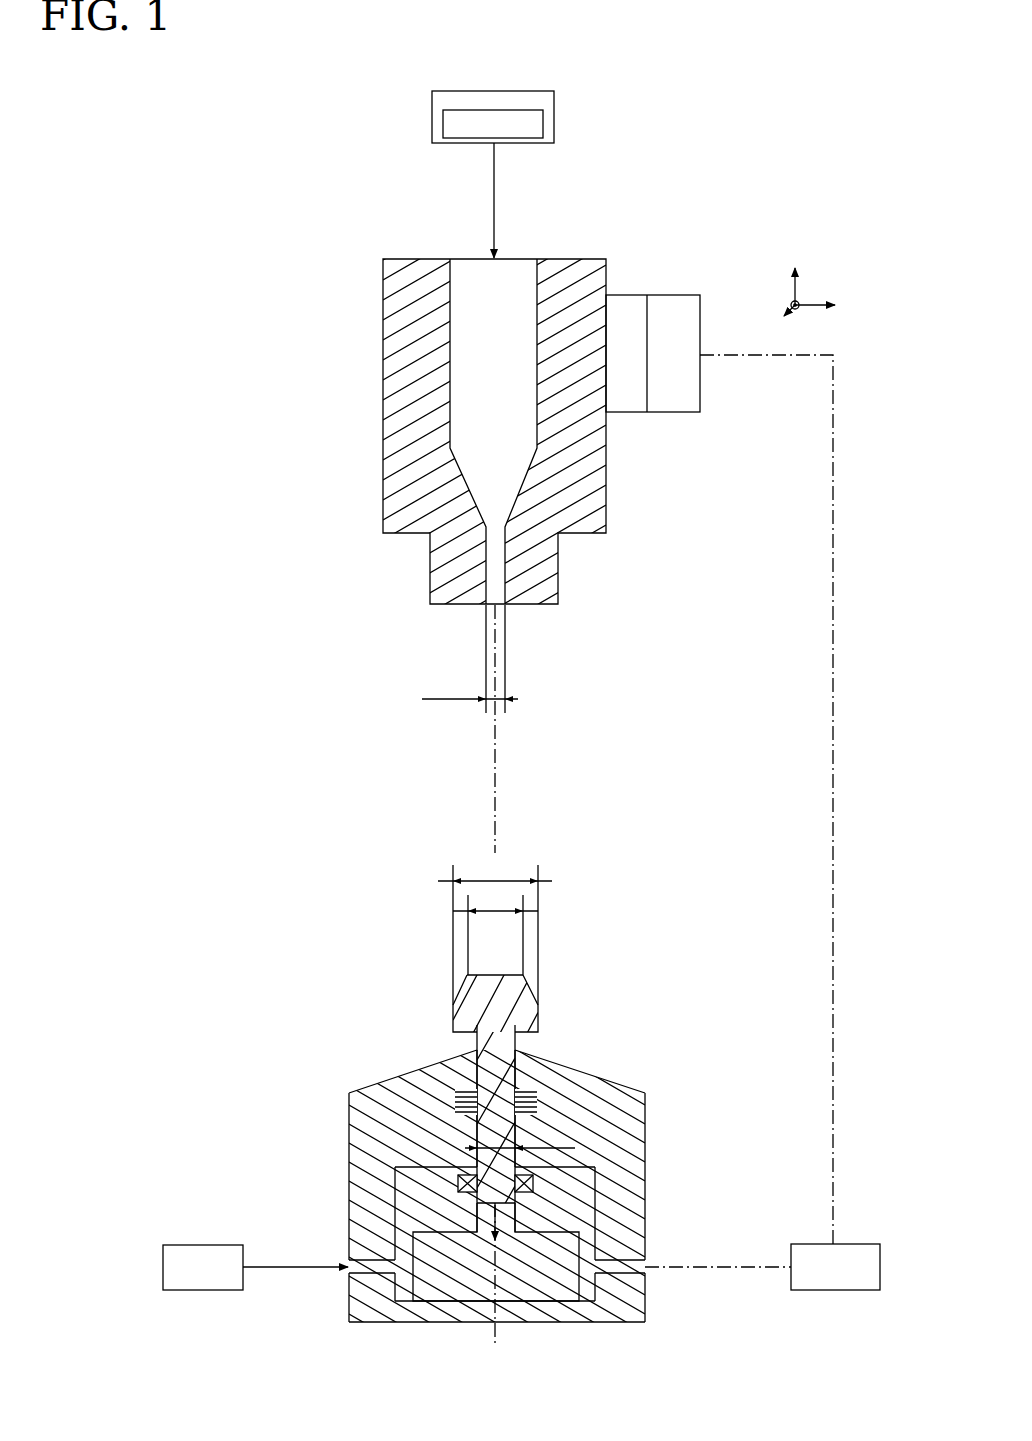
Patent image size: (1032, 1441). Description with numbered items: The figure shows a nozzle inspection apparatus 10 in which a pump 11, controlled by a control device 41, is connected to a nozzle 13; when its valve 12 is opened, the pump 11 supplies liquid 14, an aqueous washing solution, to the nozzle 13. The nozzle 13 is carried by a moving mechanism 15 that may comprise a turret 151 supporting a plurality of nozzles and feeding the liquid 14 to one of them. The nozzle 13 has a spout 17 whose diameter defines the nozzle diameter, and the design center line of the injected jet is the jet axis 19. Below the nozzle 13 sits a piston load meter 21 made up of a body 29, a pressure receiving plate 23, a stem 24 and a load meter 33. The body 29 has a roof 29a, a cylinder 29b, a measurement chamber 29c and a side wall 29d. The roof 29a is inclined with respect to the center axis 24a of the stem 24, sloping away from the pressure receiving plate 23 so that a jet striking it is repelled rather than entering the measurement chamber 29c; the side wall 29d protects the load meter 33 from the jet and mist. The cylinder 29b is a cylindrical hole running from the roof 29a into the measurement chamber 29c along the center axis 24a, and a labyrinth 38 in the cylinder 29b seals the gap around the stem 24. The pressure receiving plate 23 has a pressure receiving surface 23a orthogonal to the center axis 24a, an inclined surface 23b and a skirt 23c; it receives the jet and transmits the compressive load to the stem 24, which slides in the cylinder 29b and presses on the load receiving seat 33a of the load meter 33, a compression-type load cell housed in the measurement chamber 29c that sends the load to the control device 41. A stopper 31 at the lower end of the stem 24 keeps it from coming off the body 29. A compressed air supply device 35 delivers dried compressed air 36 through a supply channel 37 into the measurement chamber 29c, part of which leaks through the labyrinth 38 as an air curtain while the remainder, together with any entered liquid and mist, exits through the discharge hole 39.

The inspection apparatus 10 is at (830, 91).
The pump 11 is at (531, 117).
The valve 12 is at (543, 127).
The nozzle 13 is at (580, 258).
The liquid 14 is at (517, 200).
The moving mechanism 15 is at (674, 320).
The turret 151 is at (633, 295).
The spout 17 is at (497, 607).
The jet axis 19 is at (497, 786).
The piston load meter 21 is at (372, 965).
The pressure receiving plate 23 is at (584, 966).
The pressure receiving surface 23a is at (505, 975).
The inclined surface 23b is at (535, 990).
The skirt 23c is at (543, 1033).
The stem 24 is at (518, 1042).
The center axis 24a is at (500, 1335).
The body 29 is at (432, 1178).
The roof 29a is at (423, 1172).
The cylinder 29b is at (455, 1102).
The measurement chamber 29c is at (420, 1178).
The side wall 29d is at (458, 1237).
The stopper 31 is at (455, 1195).
The load meter 33 is at (568, 1213).
The load receiving seat 33a is at (535, 1185).
The compressed air supply device 35 is at (183, 1245).
The compressed air 36 is at (295, 1282).
The supply channel 37 is at (349, 1262).
The labyrinth 38 is at (447, 1070).
The discharge hole 39 is at (645, 1262).
The control device 41 is at (875, 1244).